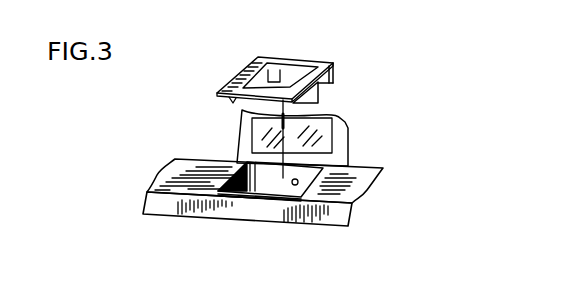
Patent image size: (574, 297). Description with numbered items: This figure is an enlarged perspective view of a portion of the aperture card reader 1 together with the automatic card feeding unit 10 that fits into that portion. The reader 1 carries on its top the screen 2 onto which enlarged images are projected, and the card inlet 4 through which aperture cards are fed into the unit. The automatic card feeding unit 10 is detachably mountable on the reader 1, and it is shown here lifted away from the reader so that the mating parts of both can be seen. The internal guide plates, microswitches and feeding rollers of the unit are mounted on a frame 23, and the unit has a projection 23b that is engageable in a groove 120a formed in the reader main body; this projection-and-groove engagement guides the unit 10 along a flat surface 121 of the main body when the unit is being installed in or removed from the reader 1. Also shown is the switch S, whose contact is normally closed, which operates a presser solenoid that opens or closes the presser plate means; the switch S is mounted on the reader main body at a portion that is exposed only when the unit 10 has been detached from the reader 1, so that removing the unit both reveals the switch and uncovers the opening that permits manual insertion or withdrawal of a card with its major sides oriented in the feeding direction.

The reader 1 is at (180, 183).
The screen 2 is at (346, 167).
The card inlet 4 is at (278, 80).
The automatic card feeding unit 10 is at (226, 62).
The frame 23 is at (331, 84).
The projection 23b is at (334, 66).
The groove 120a is at (238, 162).
The flat surface 121 is at (267, 182).
The switch S is at (295, 186).